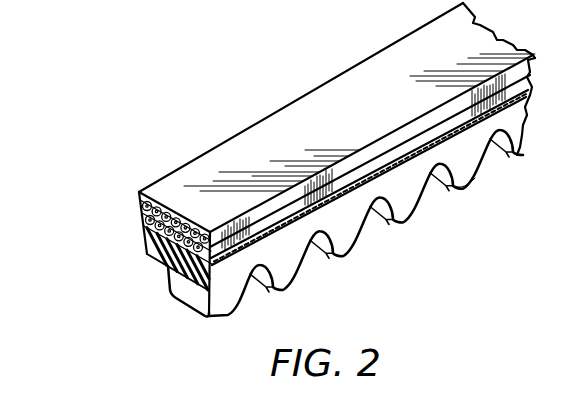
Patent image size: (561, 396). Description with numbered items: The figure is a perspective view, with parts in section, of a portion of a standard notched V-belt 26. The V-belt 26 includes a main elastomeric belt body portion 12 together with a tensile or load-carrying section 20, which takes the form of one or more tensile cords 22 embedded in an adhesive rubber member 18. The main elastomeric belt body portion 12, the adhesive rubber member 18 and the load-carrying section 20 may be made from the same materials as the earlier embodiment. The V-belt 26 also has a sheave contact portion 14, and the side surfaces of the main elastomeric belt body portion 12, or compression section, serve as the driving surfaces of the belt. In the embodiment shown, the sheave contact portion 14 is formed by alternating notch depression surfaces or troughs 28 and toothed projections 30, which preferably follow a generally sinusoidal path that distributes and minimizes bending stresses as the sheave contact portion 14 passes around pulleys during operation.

The main elastomeric belt body portion 12 is at (146, 241).
The sheave contact portion 14 is at (348, 263).
The adhesive rubber member 18 is at (140, 190).
The load-carrying section 20 is at (126, 210).
The tensile cords 22 is at (156, 245).
The V-belt 26 is at (224, 112).
The notch depression surfaces 28 is at (427, 186).
The toothed projections 30 is at (466, 172).